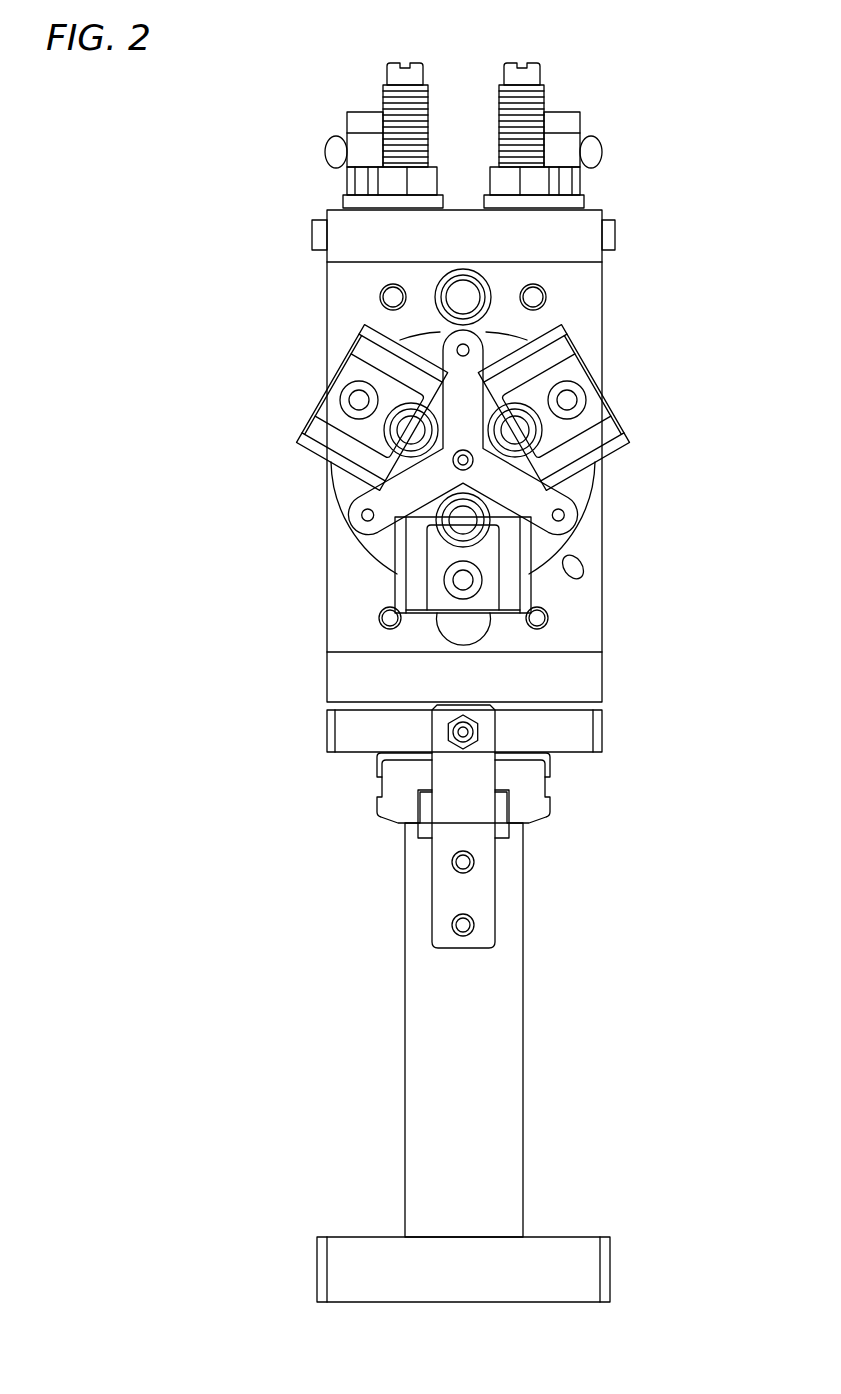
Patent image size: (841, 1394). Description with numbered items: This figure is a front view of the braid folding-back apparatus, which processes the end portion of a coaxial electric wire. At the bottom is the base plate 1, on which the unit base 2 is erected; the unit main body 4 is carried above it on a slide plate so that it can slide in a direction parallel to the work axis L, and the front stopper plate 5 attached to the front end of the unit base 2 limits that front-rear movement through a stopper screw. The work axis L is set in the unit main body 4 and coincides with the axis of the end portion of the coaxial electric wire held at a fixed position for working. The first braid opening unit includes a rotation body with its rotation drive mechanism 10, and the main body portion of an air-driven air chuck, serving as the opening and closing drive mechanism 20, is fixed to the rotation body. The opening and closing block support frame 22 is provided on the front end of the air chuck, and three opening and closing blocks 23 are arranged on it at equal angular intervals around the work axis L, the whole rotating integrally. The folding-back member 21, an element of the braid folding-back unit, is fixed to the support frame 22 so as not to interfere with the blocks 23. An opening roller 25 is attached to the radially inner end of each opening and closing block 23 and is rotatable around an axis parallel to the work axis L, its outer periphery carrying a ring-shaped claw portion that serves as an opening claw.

The base plate 1 is at (568, 1242).
The unit base 2 is at (513, 972).
The unit main body 4 is at (598, 188).
The front stopper plate 5 is at (438, 773).
The rotation drive mechanism 10 is at (326, 296).
The opening and closing drive mechanism 20 is at (498, 348).
The folding-back member 21 is at (578, 465).
The opening and closing block support frame 22 is at (298, 432).
The opening and closing block 23 is at (344, 411).
The opening roller 25 is at (392, 446).
The work axis L is at (472, 468).